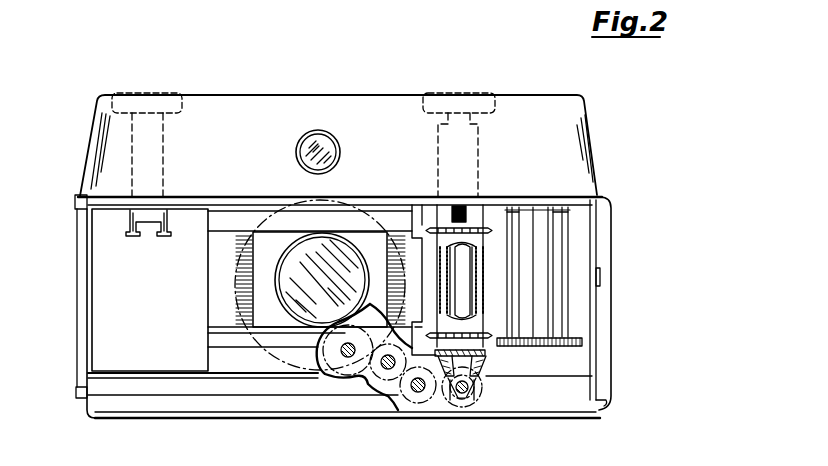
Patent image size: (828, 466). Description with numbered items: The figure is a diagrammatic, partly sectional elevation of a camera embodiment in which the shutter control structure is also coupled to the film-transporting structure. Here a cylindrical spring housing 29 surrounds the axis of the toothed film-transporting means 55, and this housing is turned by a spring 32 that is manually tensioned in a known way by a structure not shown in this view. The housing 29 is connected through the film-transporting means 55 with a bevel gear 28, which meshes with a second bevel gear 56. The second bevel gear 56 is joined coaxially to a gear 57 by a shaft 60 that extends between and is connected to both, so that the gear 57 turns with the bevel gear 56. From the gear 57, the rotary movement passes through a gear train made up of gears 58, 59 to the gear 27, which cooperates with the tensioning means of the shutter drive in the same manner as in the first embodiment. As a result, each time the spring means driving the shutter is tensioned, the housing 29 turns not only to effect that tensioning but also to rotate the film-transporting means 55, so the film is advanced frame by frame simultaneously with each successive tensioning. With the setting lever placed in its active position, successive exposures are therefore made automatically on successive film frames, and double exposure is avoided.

The gear 27 is at (347, 374).
The bevel gear 28 is at (487, 348).
The cylindrical spring housing 29 is at (480, 278).
The spring 32 is at (480, 253).
The toothed film-transporting means 55 is at (487, 344).
The second bevel gear 56 is at (469, 406).
The gear 57 is at (476, 417).
The gear train gear 58 is at (405, 404).
The gear train gear 59 is at (384, 381).
The shaft 60 is at (447, 405).